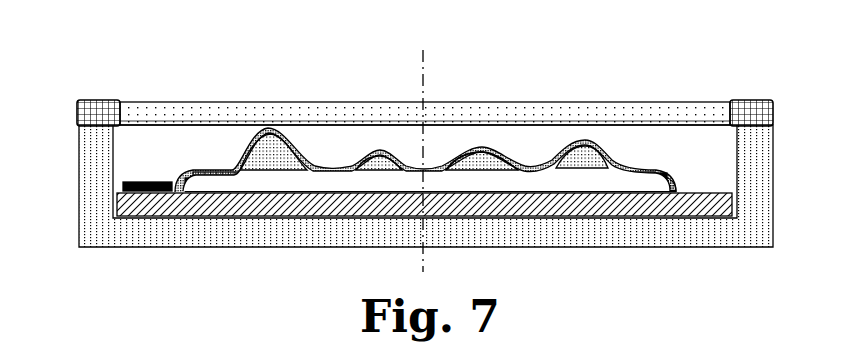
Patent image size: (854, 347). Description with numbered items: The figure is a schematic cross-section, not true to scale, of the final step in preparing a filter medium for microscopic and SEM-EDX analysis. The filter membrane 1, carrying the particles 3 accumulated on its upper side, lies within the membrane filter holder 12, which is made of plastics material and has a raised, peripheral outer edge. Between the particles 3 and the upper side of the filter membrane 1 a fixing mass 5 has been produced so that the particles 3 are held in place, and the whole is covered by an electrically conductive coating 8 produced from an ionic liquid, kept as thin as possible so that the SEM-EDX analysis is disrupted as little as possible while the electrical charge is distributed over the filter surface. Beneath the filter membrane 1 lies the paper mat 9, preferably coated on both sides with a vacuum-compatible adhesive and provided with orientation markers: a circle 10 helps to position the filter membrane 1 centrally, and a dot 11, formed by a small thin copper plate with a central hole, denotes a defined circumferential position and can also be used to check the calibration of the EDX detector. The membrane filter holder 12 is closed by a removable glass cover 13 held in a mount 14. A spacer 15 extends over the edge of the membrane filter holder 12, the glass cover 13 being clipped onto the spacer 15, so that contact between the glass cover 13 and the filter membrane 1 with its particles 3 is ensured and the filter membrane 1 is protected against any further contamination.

The filter membrane 1 is at (220, 170).
The particles 3 is at (478, 150).
The fixing mass 5 is at (241, 169).
The electrically conductive coating 8 is at (303, 153).
The paper mat 9 is at (606, 200).
The circle 10 is at (664, 187).
The dot (position marker) 11 is at (151, 183).
The membrane filter holder 12 is at (172, 237).
The glass cover 13 is at (580, 105).
The mount 14 is at (98, 107).
The spacer 15 is at (90, 180).